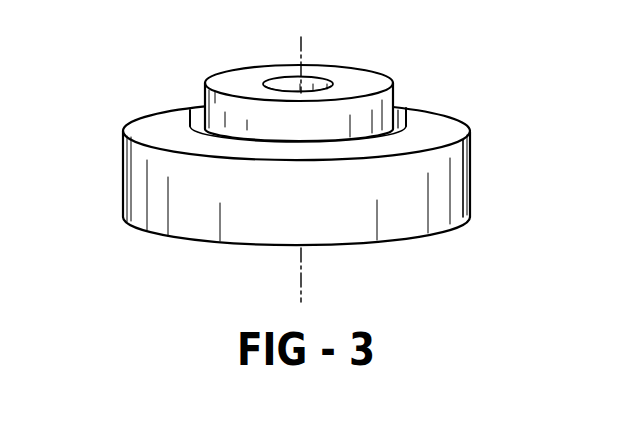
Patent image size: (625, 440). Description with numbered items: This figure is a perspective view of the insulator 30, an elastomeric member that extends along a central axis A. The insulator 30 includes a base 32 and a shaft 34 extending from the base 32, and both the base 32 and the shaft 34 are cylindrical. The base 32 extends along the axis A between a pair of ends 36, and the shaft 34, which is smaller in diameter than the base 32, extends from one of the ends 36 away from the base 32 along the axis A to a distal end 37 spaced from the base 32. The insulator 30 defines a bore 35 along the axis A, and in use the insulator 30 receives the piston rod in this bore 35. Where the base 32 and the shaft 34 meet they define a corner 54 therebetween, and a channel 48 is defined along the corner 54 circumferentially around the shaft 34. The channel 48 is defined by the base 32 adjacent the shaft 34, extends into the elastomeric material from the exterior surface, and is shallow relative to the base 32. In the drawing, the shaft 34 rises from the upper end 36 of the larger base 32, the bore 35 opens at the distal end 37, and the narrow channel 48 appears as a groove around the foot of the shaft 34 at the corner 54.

The insulator 30 is at (463, 191).
The base 32 is at (140, 197).
The shaft 34 is at (218, 82).
The bore 35 is at (281, 84).
The ends 36 is at (142, 128).
The distal end 37 is at (364, 70).
The channel 48 is at (397, 112).
The corner 54 is at (196, 116).
The axis A is at (299, 50).